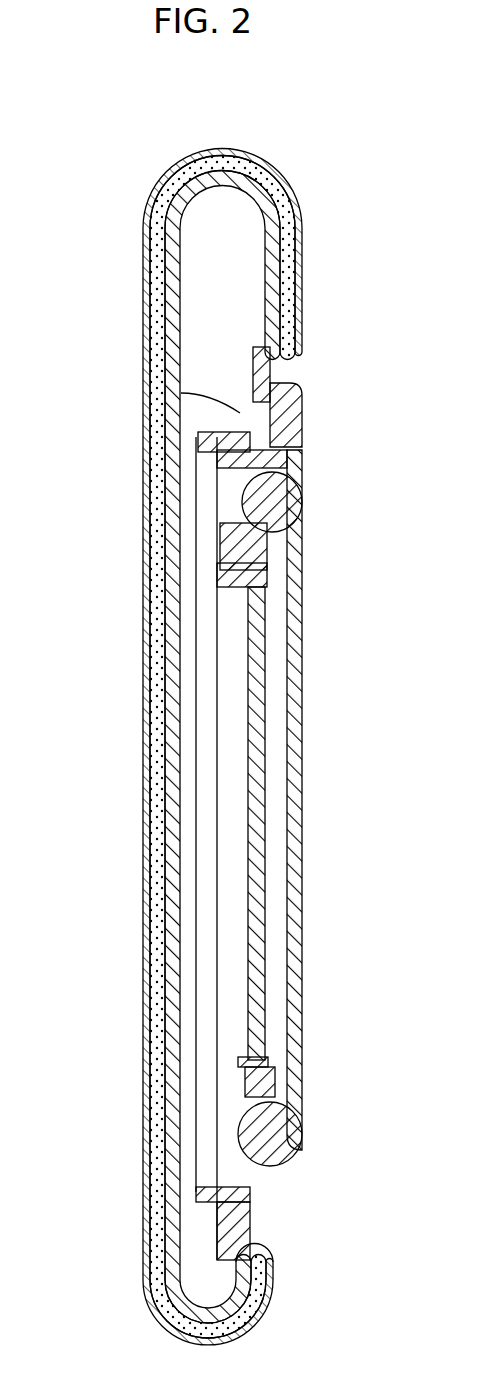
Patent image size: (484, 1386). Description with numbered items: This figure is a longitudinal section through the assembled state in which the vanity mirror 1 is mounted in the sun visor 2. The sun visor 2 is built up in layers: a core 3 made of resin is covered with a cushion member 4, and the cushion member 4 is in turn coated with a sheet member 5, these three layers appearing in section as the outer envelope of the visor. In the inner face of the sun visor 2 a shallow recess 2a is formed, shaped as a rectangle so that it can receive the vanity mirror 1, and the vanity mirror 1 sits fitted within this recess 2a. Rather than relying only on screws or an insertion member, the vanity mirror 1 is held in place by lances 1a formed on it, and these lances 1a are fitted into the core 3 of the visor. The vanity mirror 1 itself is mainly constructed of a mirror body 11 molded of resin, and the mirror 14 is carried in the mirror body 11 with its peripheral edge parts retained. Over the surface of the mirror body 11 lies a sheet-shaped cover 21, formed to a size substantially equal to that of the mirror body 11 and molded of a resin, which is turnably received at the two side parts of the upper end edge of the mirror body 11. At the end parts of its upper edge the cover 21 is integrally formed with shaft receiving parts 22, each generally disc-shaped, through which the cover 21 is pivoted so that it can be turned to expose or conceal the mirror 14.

The vanity mirror 1 is at (233, 796).
The lances 1a is at (240, 413).
The sun visor 2 is at (232, 720).
The shallow recess 2a is at (220, 1213).
The core 3 is at (172, 740).
The cushion member 4 is at (157, 800).
The sheet member 5 is at (143, 868).
The mirror body 11 is at (255, 1086).
The mirror 14 is at (258, 945).
The cover 21 is at (297, 858).
The shaft receiving parts 22 is at (292, 492).